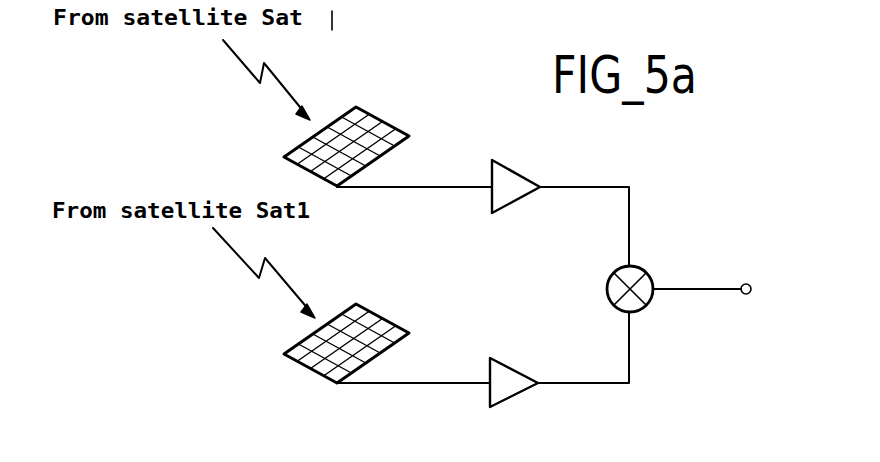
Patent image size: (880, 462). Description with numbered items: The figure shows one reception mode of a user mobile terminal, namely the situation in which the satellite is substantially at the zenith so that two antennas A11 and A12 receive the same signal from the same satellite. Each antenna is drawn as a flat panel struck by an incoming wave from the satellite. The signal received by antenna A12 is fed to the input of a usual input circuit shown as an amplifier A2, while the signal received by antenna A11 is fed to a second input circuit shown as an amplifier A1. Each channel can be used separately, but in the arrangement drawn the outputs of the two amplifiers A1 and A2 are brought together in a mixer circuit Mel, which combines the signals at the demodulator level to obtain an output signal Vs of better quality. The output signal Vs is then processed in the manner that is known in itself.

The antenna A12 is at (392, 125).
The antenna A11 is at (382, 316).
The amplifier A2 is at (516, 168).
The amplifier A1 is at (514, 365).
The mixer circuit Mel is at (647, 275).
The output signal Vs is at (752, 286).